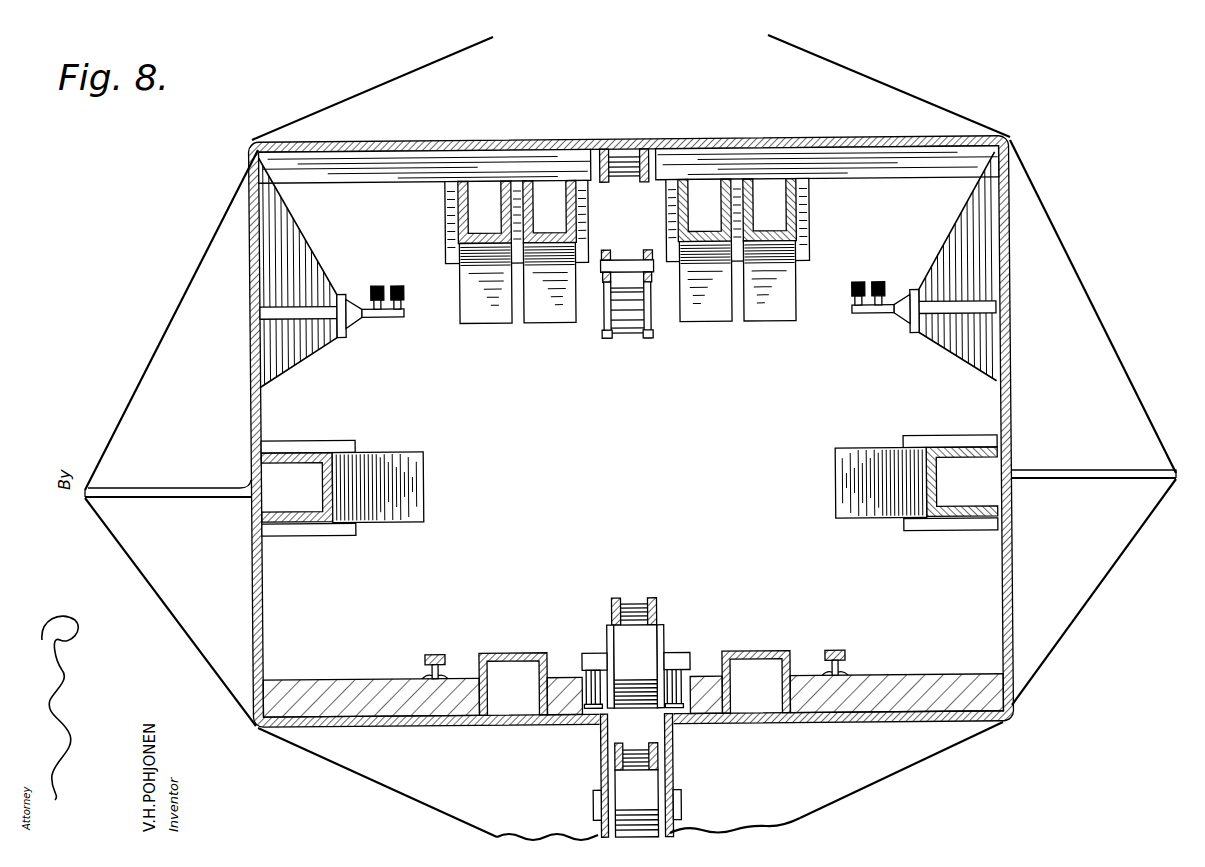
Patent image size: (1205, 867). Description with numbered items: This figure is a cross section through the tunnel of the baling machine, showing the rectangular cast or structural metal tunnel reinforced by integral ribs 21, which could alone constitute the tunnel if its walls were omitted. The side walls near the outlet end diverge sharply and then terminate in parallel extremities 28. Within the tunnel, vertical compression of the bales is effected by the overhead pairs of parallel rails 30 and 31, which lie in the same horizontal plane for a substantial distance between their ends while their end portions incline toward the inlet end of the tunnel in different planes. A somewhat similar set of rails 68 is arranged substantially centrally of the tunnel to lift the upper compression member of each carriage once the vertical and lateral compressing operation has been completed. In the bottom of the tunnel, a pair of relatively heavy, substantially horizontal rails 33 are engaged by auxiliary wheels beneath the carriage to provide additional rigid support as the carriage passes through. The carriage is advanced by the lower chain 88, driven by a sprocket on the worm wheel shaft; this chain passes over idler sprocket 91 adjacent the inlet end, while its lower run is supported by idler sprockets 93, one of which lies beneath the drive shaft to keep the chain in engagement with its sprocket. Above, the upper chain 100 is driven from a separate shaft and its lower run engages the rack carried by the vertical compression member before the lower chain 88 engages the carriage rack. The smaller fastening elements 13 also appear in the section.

The bolt 13 is at (437, 653).
The ribs 21 is at (232, 206).
The parallel extremities of the side walls 28 is at (405, 441).
The overhead parallel rails 30 is at (548, 322).
The overhead parallel rails 31 is at (487, 322).
The rails 33 is at (510, 652).
The rails 68 is at (397, 284).
The lower chain 88 is at (650, 599).
The idler sprocket 91 is at (663, 652).
The idler sprockets 93 is at (645, 795).
The upper chain 100 is at (650, 252).